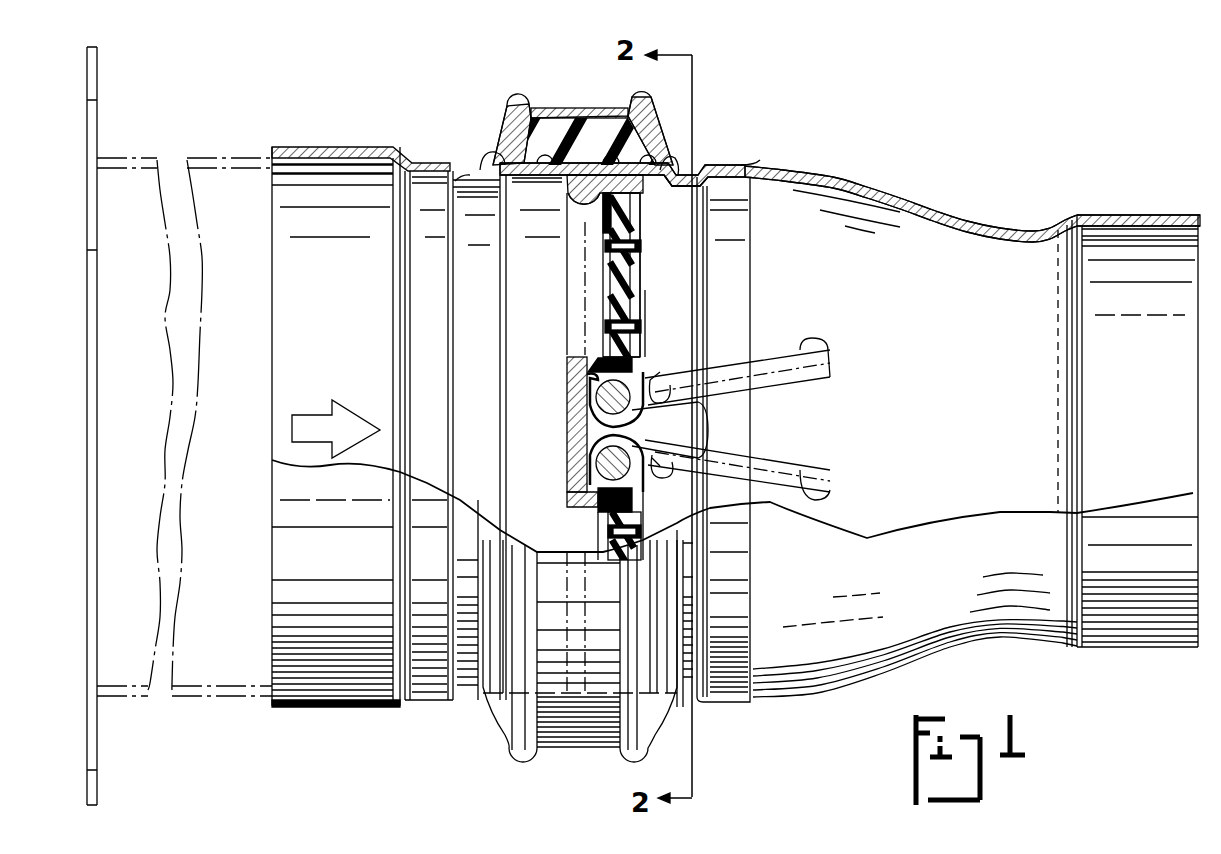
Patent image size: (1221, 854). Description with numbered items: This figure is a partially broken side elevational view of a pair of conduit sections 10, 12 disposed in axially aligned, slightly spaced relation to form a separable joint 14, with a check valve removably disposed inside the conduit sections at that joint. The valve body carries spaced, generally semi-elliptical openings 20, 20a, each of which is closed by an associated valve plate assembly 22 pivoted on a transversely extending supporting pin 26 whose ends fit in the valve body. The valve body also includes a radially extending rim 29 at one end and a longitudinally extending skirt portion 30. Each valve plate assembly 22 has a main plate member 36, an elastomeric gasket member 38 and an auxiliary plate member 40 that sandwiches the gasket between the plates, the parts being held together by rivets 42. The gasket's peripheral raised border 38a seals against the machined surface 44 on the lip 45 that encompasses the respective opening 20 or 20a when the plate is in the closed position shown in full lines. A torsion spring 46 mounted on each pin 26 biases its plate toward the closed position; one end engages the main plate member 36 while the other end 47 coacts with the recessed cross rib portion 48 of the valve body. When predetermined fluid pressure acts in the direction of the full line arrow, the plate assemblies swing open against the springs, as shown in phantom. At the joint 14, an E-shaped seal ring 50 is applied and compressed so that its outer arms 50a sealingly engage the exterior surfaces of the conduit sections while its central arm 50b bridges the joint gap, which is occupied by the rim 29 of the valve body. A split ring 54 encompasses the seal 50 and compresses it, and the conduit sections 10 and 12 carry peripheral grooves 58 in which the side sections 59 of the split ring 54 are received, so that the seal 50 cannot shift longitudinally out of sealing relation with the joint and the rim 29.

The conduit section 10 is at (332, 145).
The conduit section 12 is at (970, 207).
The separable joint 14 is at (570, 272).
The semi-elliptical opening 20 is at (582, 218).
The semi-elliptical opening 20a is at (590, 540).
The valve plate assembly 22 is at (650, 348).
The supporting pin 26 is at (597, 405).
The rim 29 is at (603, 122).
The skirt portion 30 is at (690, 175).
The main plate member 36 is at (642, 265).
The gasket member 38 is at (632, 274).
The raised border 38a is at (607, 352).
The auxiliary plate member 40 is at (612, 293).
The rivet 42 is at (642, 230).
The machined surface 44 is at (700, 184).
The lip 45 is at (575, 207).
The torsion spring 46 is at (655, 383).
The spring end 47 is at (590, 386).
The recessed cross rib portion 48 is at (570, 461).
The seal ring 50 is at (548, 115).
The outer arm 50a is at (507, 130).
The central arm 50b is at (612, 155).
The split ring 54 is at (560, 108).
The peripheral groove 58 is at (470, 172).
The side section 59 is at (480, 165).